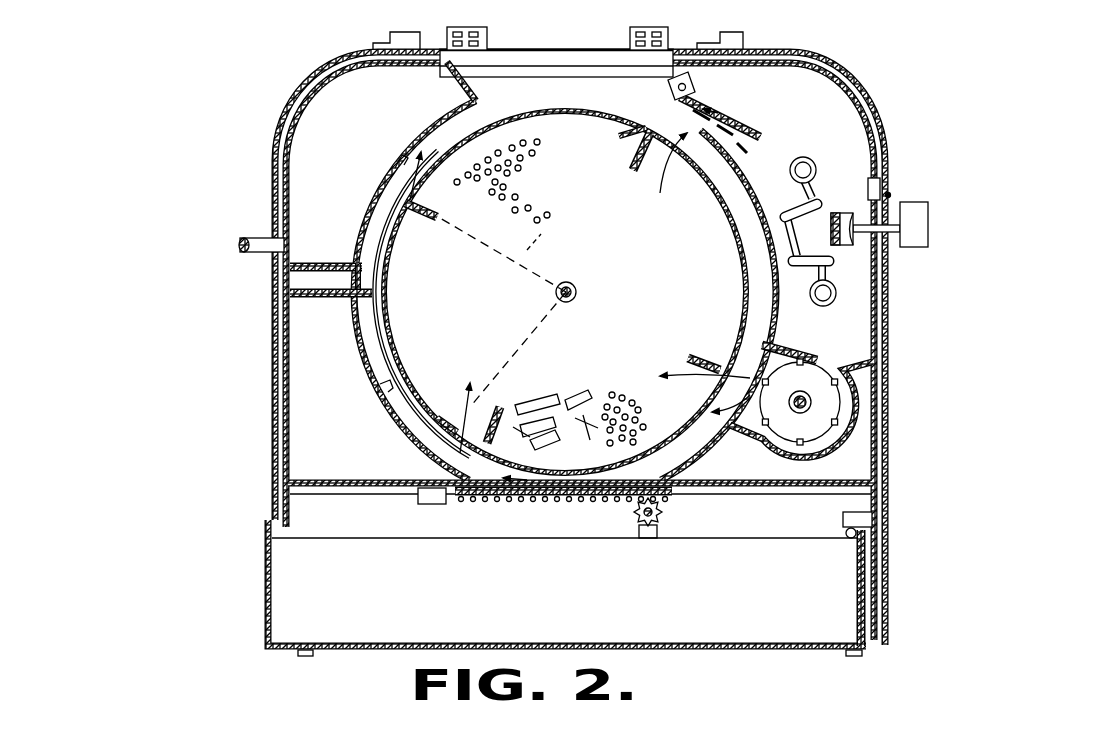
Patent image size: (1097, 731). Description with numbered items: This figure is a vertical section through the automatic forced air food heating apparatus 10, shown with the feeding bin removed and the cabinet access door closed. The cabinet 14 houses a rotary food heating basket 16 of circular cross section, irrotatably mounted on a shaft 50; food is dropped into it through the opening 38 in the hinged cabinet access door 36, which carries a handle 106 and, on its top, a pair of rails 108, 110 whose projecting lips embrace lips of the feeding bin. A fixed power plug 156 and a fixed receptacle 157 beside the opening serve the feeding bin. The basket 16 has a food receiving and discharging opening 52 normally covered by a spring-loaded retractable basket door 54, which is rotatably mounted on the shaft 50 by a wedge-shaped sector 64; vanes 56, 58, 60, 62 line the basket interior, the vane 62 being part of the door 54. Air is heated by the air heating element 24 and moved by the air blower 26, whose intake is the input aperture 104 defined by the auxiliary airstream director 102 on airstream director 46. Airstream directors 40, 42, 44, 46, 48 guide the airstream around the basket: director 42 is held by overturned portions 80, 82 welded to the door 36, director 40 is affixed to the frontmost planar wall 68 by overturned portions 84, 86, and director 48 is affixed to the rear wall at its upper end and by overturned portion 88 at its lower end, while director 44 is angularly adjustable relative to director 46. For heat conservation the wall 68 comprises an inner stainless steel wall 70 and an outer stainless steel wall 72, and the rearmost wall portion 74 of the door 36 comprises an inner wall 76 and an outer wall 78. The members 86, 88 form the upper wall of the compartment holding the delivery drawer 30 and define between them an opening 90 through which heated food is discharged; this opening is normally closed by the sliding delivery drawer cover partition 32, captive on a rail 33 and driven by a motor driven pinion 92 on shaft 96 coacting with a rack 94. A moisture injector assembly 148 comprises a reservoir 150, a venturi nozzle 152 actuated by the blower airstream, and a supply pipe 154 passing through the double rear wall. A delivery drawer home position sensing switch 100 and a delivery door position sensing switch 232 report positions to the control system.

The automatic forced air food heating apparatus 10 is at (228, 444).
The cabinet 14 is at (893, 372).
The rotary food heating basket 16 is at (525, 112).
The air heating element 24 is at (813, 200).
The air blower 26 is at (825, 366).
The delivery drawer 30 is at (265, 612).
The delivery drawer cover partition 32 is at (477, 497).
The rail 33 is at (742, 495).
The hinged cabinet access door 36 is at (298, 95).
The opening 38 is at (554, 50).
The airstream director 40 is at (360, 351).
The airstream director 42 is at (373, 183).
The airstream director 44 is at (745, 133).
The airstream director 46 is at (744, 167).
The airstream director 48 is at (868, 412).
The shaft 50 is at (575, 281).
The food receiving and discharging opening 52 is at (447, 413).
The retractable basket door 54 is at (389, 313).
The vane 56 is at (634, 171).
The vane 58 is at (690, 357).
The vane 60 is at (501, 407).
The vane 62 is at (433, 219).
The wedge-shaped sector 64 is at (542, 245).
The frontmost planar wall 68 is at (276, 476).
The inner stainless steel wall 70 is at (290, 393).
The outer stainless steel wall 72 is at (272, 364).
The rearmost wall portion 74 is at (876, 100).
The inner stainless steel wall 76 is at (861, 118).
The outer stainless steel wall 78 is at (845, 96).
The overturned portion 80 is at (459, 81).
The overturned portion 82 is at (324, 263).
The overturned portion 84 is at (323, 298).
The overturned portion 86 is at (368, 480).
The overturned portion 88 is at (772, 480).
The opening 90 is at (611, 500).
The motor driven pinion 92 is at (656, 526).
The rack 94 is at (513, 498).
The shaft 96 is at (639, 526).
The delivery drawer home position sensing switch 100 is at (873, 519).
The auxiliary airstream director 102 is at (790, 348).
The input aperture 104 is at (850, 372).
The handle 106 is at (245, 238).
The rail 108 is at (405, 32).
The rail 110 is at (713, 32).
The moisture injector assembly 148 is at (905, 206).
The reservoir 150 is at (905, 250).
The venturi nozzle 152 is at (852, 250).
The supply pipe 154 is at (880, 180).
The power plug 156 is at (659, 27).
The fixed receptacle 157 is at (488, 40).
The delivery door position sensing switch 232 is at (420, 503).